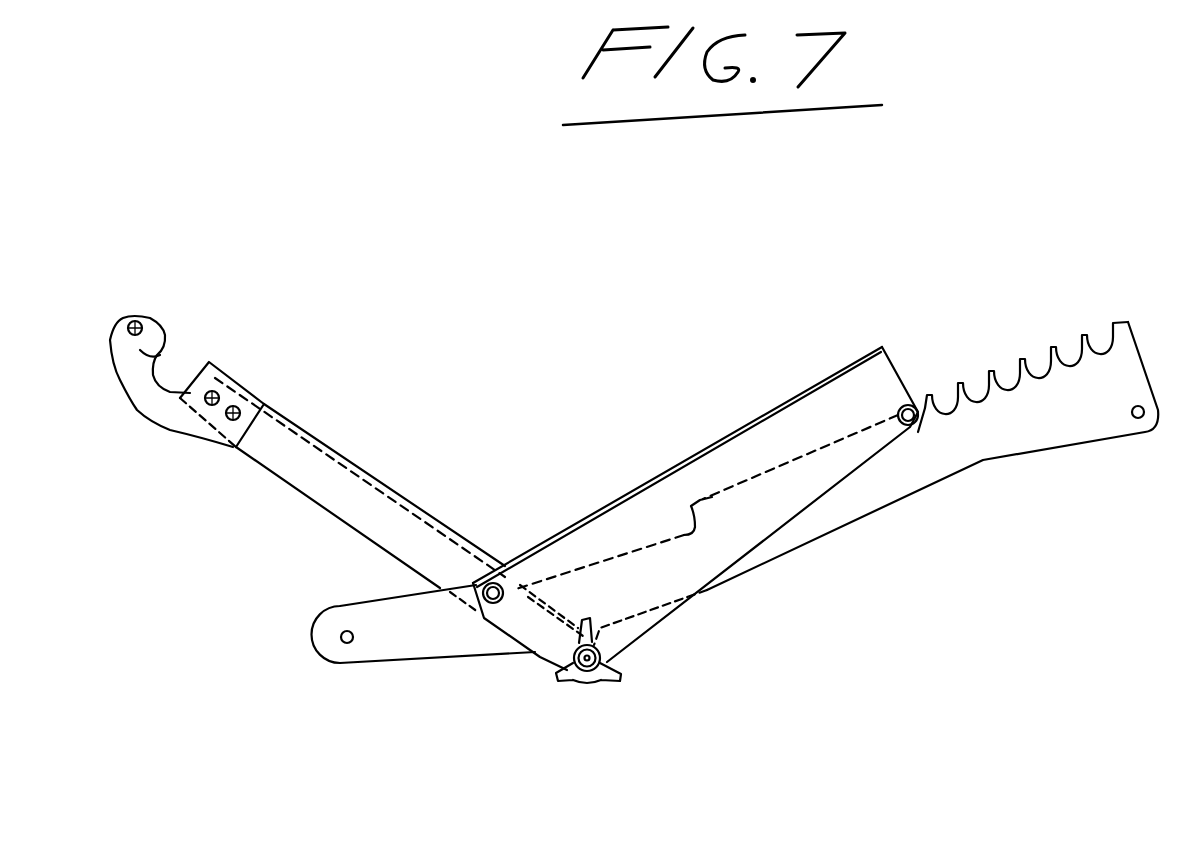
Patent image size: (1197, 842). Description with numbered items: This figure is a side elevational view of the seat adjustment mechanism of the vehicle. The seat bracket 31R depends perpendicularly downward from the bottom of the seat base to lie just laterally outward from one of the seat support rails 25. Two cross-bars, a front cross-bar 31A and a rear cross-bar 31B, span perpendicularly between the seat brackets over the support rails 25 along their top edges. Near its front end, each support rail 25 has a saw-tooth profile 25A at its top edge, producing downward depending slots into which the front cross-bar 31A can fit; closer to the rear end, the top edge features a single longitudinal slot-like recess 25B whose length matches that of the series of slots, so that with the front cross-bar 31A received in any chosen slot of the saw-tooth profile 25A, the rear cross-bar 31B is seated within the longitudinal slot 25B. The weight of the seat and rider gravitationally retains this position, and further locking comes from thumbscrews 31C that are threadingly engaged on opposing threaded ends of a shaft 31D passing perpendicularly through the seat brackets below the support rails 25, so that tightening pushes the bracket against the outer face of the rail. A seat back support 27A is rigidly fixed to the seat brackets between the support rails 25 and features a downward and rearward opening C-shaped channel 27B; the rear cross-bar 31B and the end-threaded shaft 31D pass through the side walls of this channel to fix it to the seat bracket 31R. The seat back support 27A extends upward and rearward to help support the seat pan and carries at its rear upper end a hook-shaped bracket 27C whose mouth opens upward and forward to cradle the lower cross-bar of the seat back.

The seat support rails 25 is at (1038, 435).
The saw-tooth profile 25A is at (1026, 331).
The longitudinal slot-like recess 25B is at (662, 530).
The seat back support 27A is at (425, 488).
The C-shaped channel 27B is at (322, 478).
The hook end 27C is at (158, 355).
The front cross-bar 31A is at (911, 428).
The rear cross-bar 31B is at (513, 574).
The thumbscrews 31C is at (617, 680).
The shaft 31D is at (553, 682).
The seat bracket 31R is at (787, 443).